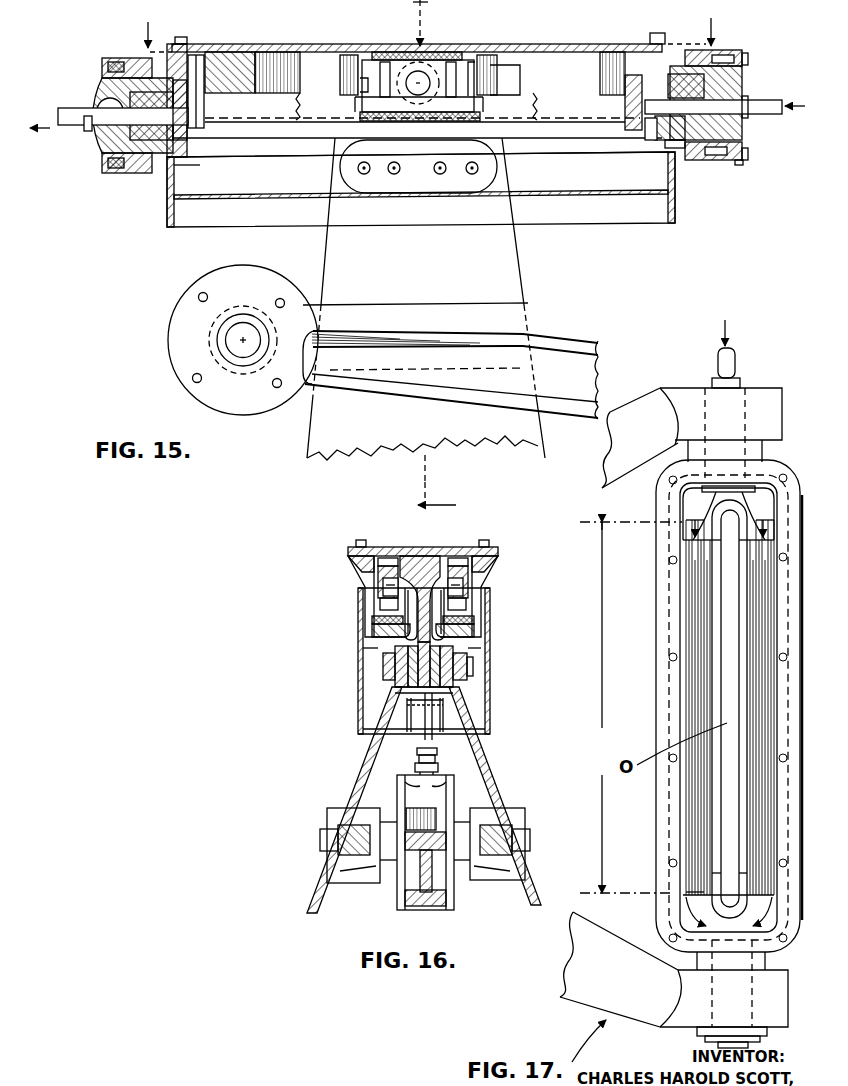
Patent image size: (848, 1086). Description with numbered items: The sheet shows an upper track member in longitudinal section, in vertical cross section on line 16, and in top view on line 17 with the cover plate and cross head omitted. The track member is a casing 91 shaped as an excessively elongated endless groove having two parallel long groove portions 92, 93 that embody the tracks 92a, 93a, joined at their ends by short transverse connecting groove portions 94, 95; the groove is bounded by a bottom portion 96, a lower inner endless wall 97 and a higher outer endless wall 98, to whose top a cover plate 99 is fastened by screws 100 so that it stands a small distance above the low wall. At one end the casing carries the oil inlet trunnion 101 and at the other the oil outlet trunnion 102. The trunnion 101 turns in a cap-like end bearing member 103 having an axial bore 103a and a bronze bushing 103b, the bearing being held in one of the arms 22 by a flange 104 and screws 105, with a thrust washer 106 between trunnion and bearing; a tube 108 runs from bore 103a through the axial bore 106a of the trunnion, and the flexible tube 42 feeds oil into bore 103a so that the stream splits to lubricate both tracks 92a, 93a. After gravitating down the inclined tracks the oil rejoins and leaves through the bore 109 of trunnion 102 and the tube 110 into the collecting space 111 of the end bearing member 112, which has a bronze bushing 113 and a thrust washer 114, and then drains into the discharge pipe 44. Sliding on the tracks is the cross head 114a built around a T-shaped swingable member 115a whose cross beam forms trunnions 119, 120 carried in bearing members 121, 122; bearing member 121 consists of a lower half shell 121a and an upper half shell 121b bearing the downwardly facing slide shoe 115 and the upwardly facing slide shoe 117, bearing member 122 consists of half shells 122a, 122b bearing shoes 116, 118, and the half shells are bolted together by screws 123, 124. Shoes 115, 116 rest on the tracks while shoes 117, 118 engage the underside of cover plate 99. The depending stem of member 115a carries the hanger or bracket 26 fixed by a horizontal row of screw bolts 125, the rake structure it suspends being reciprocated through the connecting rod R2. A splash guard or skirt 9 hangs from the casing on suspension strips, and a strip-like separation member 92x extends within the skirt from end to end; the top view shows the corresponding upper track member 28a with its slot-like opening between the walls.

In FIG. 15, the splash guard or skirt 9 is at (168, 222).
In FIG. 16, the splash guard or skirt 9 is at (360, 720).
In FIG. 15, the casing 91 is at (198, 150).
In FIG. 16, the casing 91 is at (362, 660).
In FIG. 15, the long groove portion 92 is at (278, 198).
In FIG. 16, the long groove portion 92 is at (375, 628).
In FIG. 17, the long groove portion 92 is at (631, 707).
In FIG. 16, the track 92a is at (385, 658).
In FIG. 17, the track 92a is at (690, 638).
In FIG. 16, the separation member 92x is at (432, 734).
In FIG. 16, the long groove portion 93 is at (470, 615).
In FIG. 17, the long groove portion 93 is at (600, 821).
In FIG. 16, the track 93a is at (470, 656).
In FIG. 17, the track 93a is at (760, 670).
In FIG. 17, the short transverse connecting groove portion 94 is at (688, 512).
In FIG. 15, the short transverse connecting groove portion 95 is at (252, 108).
In FIG. 17, the short transverse connecting groove portion 95 is at (688, 910).
In FIG. 15, the bottom portion 96 is at (222, 140).
In FIG. 16, the bottom portion 96 is at (390, 662).
In FIG. 15, the inner endless wall portion 97 is at (283, 62).
In FIG. 17, the inner endless wall portion 97 is at (708, 597).
In FIG. 15, the outer endless wall 98 is at (190, 66).
In FIG. 17, the outer endless wall 98 is at (686, 830).
In FIG. 15, the cover plate 99 is at (508, 45).
In FIG. 16, the cover plate 99 is at (410, 546).
In FIG. 15, the screws 100 is at (178, 38).
In FIG. 16, the screws 100 is at (490, 540).
In FIG. 15, the oil inlet trunnion 101 is at (640, 80).
In FIG. 15, the oil outlet trunnion 102 is at (205, 100).
In FIG. 17, the oil outlet trunnion 102 is at (766, 957).
In FIG. 15, the end bearing member 103 is at (738, 78).
In FIG. 17, the end bearing member 103 is at (763, 455).
In FIG. 15, the axial bore 103a is at (742, 138).
In FIG. 15, the bronze bushing 103b is at (688, 160).
In FIG. 15, the flange 104 is at (740, 165).
In FIG. 15, the screws 105 is at (748, 157).
In FIG. 15, the thrust washer 106 is at (744, 88).
In FIG. 15, the axial bore 106a is at (672, 146).
In FIG. 15, the tube 108 is at (650, 132).
In FIG. 17, the tube 108 is at (699, 487).
In FIG. 15, the bore 109 is at (165, 140).
In FIG. 15, the tube 110 is at (118, 118).
In FIG. 15, the collecting space 111 is at (86, 131).
In FIG. 15, the end bearing member 112 is at (100, 92).
In FIG. 15, the bronze bushing 113 is at (136, 173).
In FIG. 15, the thrust washer 114 is at (148, 60).
In FIG. 15, the cross head 114a is at (498, 84).
In FIG. 16, the cross head 114a is at (425, 566).
In FIG. 16, the slide shoe element 115 is at (395, 660).
In FIG. 16, the T-shaped swingable member 115a is at (457, 687).
In FIG. 16, the slide shoe element 116 is at (452, 660).
In FIG. 15, the slide shoe element 117 is at (452, 52).
In FIG. 16, the slide shoe element 117 is at (355, 560).
In FIG. 16, the slide shoe element 118 is at (492, 558).
In FIG. 16, the trunnion 119 is at (388, 600).
In FIG. 16, the trunnion 120 is at (465, 598).
In FIG. 16, the bearing member 121 is at (380, 580).
In FIG. 16, the lower half shell 121a is at (382, 618).
In FIG. 16, the upper half shell 121b is at (388, 562).
In FIG. 16, the bearing member 122 is at (470, 580).
In FIG. 16, the lower half shell 122a is at (470, 628).
In FIG. 16, the upper half shell 122b is at (462, 562).
In FIG. 15, the screw 123 is at (360, 76).
In FIG. 15, the screw 124 is at (560, 74).
In FIG. 15, the screw bolts 125 is at (440, 176).
In FIG. 15, the section line 16— 16 is at (432, 241).
In FIG. 16, the section line 16— 16 is at (437, 493).
In FIG. 15, the section line 17— 17 is at (147, 36).
In FIG. 15, the arms 22 is at (725, 50).
In FIG. 17, the arms 22 is at (638, 402).
In FIG. 15, the hanger or bracket 26 is at (516, 255).
In FIG. 16, the hanger or bracket 26 is at (492, 772).
In FIG. 17, the upper track member 28a is at (660, 575).
In FIG. 15, the flexible tube 42 is at (766, 113).
In FIG. 17, the flexible tube 42 is at (738, 360).
In FIG. 15, the pipe conduit 44 is at (74, 114).
In FIG. 17, the pipe conduit 44 is at (746, 1045).
In FIG. 15, the connecting rod R2 is at (574, 342).
In FIG. 16, the connecting rod R2 is at (420, 895).